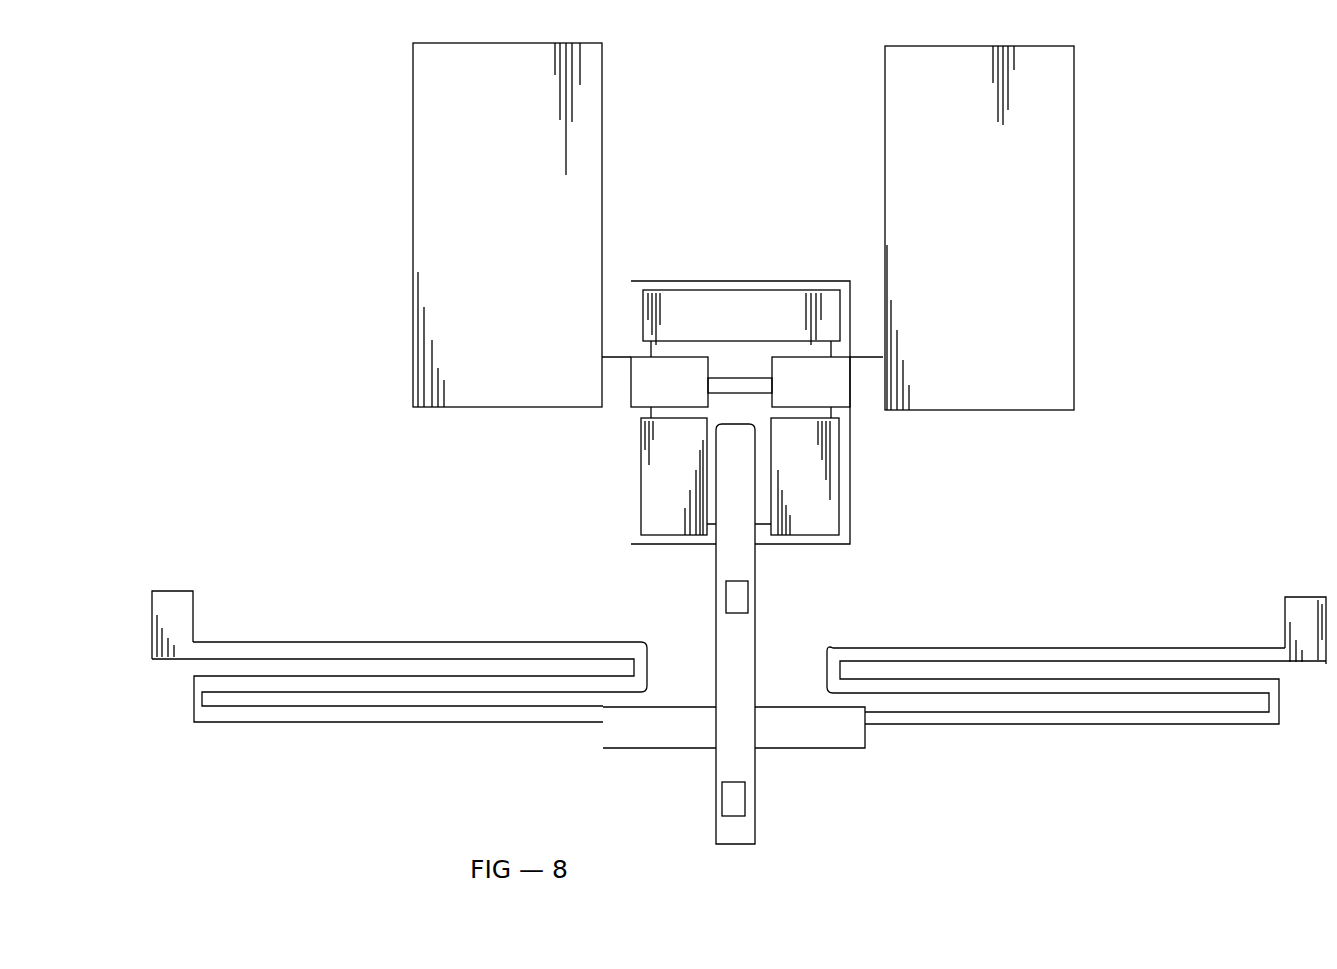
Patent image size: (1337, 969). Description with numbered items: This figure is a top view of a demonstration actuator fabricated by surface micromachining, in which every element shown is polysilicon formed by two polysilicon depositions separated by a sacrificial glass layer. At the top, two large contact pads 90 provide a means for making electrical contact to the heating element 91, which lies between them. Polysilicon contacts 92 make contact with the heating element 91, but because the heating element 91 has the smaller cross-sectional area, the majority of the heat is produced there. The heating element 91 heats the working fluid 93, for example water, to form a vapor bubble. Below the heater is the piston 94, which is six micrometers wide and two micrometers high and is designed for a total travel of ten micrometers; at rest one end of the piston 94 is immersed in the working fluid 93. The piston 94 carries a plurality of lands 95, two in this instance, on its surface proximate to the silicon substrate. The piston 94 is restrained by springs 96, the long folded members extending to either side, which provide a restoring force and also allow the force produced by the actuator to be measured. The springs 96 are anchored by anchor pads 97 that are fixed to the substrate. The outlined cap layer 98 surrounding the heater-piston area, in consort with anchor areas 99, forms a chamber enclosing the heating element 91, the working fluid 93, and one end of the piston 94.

The contact pads 90 is at (1074, 124).
The heating element 91 is at (752, 378).
The polysilicon contacts 92 is at (865, 410).
The working fluid 93 is at (725, 358).
The piston 94 is at (737, 845).
The lands 95 is at (748, 597).
The springs 96 is at (1180, 727).
The anchor pads 97 is at (1287, 597).
The cap layer 98 is at (849, 544).
The anchor areas 99 is at (965, 523).